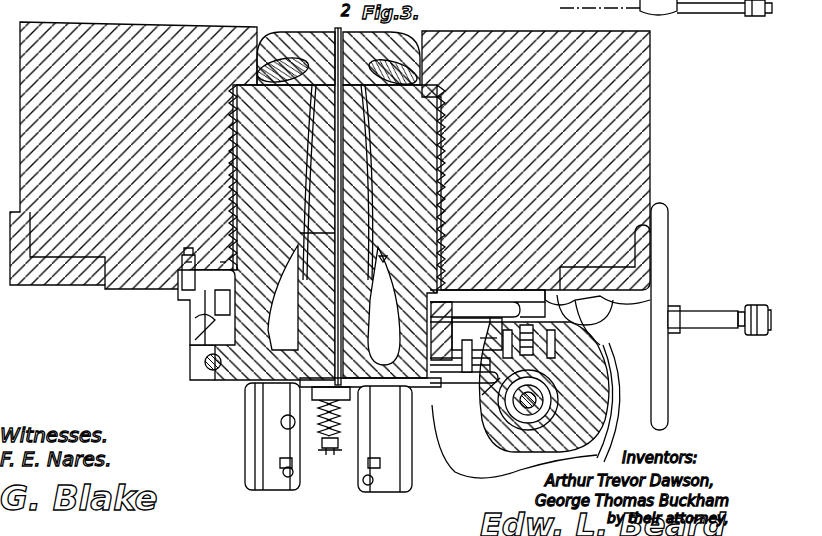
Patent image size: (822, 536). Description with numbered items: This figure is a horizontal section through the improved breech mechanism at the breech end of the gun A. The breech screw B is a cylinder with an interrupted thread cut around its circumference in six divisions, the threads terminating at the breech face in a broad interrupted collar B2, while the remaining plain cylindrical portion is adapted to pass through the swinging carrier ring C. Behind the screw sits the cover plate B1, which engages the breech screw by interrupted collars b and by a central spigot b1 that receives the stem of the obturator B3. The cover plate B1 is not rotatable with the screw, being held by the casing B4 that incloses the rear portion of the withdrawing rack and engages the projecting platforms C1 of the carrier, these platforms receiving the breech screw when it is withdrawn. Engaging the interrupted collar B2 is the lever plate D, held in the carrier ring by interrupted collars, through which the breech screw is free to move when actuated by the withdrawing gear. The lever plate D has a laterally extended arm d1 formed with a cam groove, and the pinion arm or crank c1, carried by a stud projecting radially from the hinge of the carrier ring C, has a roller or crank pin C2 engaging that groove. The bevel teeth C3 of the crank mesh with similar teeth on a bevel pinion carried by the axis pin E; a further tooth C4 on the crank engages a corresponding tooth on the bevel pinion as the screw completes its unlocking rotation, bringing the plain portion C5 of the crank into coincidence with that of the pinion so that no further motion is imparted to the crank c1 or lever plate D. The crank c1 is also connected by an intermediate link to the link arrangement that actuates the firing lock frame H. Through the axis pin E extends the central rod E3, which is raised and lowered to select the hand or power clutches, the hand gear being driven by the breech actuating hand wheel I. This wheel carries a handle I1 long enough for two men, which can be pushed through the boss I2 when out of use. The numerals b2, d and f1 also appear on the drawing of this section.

The breech end of the gun A is at (330, 157).
The breech screw B is at (326, 232).
The cover plate B1 is at (238, 380).
The interrupted collar B2 is at (498, 253).
The obturator B3 is at (283, 40).
The rack casing B4 is at (308, 455).
The swinging carrier ring C is at (160, 258).
The platform C1 is at (457, 395).
The roller or crank pin C2 is at (193, 310).
The bevel teeth C3 is at (283, 297).
The tooth C4 is at (222, 268).
The plain portion C5 is at (186, 268).
The lever plate D is at (193, 298).
The axis pin E is at (526, 400).
The central rod E3 is at (522, 422).
The firing lock frame H is at (322, 455).
The breech actuating hand wheel I is at (668, 240).
The handle I1 is at (707, 317).
The boss I2 is at (670, 313).
The interrupted collars b is at (182, 392).
The central spigot b1 is at (386, 262).
The pin b2 is at (502, 375).
The pinion arm or crank c1 is at (291, 420).
The lug d is at (545, 232).
The laterally extended arm d1 is at (576, 293).
The screw f1 is at (205, 360).